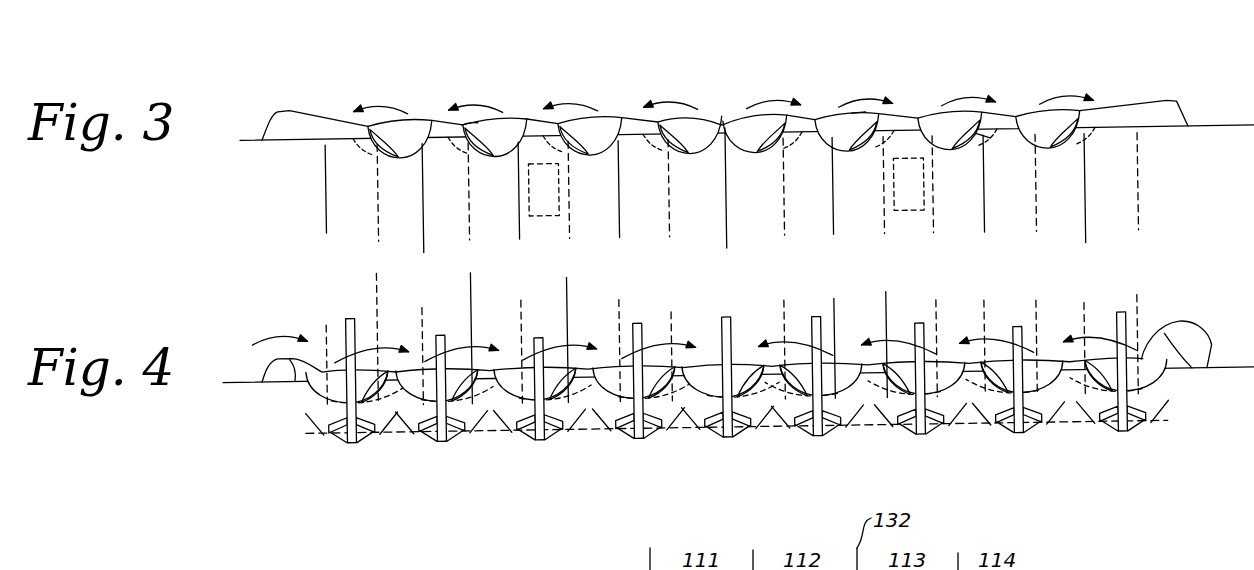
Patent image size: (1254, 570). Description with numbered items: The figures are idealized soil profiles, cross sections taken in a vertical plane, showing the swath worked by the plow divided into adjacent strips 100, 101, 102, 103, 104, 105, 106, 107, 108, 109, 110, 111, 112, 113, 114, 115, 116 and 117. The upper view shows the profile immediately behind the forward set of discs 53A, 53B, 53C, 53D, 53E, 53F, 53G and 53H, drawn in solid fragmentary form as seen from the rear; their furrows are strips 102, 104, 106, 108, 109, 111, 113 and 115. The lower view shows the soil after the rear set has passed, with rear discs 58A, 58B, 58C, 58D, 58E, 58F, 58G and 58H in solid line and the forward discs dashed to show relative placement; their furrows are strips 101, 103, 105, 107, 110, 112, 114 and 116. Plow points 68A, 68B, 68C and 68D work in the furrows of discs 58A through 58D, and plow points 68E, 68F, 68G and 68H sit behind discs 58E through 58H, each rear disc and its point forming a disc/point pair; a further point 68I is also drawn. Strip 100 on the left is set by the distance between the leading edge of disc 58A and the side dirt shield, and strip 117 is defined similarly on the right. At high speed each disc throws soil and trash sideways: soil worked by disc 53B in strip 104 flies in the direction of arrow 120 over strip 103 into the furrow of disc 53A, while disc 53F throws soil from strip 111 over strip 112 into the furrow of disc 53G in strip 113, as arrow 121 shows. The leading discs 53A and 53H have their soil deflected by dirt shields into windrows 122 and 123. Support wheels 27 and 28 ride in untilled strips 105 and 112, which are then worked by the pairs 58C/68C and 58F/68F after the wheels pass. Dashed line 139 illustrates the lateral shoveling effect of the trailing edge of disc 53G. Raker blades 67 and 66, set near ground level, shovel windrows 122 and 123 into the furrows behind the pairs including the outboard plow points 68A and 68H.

In FIG. 3, the support wheel 27 is at (527, 206).
In FIG. 3, the support wheel 28 is at (925, 213).
In FIG. 3, the forward disc 53A is at (433, 117).
In FIG. 3, the forward disc 53B is at (528, 116).
In FIG. 3, the forward disc 53C is at (623, 116).
In FIG. 3, the forward disc 53D is at (725, 126).
In FIG. 3, the forward disc 53E is at (726, 126).
In FIG. 3, the forward disc 53F is at (815, 121).
In FIG. 3, the forward disc 53G is at (918, 121).
In FIG. 3, the forward disc 53H is at (1016, 121).
In FIG. 4, the rear disc 58A is at (327, 366).
In FIG. 4, the rear disc 58B is at (417, 366).
In FIG. 4, the rear disc 58C is at (519, 366).
In FIG. 4, the rear disc 58D is at (618, 366).
In FIG. 4, the rear disc 58E is at (845, 366).
In FIG. 4, the rear disc 58F is at (950, 366).
In FIG. 4, the rear disc 58G is at (1050, 366).
In FIG. 4, the rear disc 58H is at (1145, 335).
In FIG. 4, the raker blade 66 is at (1222, 352).
In FIG. 4, the raker blade 67 is at (243, 345).
In FIG. 4, the plow point 68A is at (351, 438).
In FIG. 4, the plow point 68B is at (441, 438).
In FIG. 4, the plow point 68C is at (539, 438).
In FIG. 4, the plow point 68D is at (638, 438).
In FIG. 4, the plow point 68E is at (817, 438).
In FIG. 4, the plow point 68F is at (920, 438).
In FIG. 4, the plow point 68G is at (1018, 438).
In FIG. 4, the plow point 68H is at (1122, 438).
In FIG. 4, the tine sweep 68I is at (727, 438).
In FIG. 3, the strip 100 is at (301, 189).
In FIG. 3, the strip 101 is at (355, 193).
In FIG. 3, the strip 102 is at (403, 199).
In FIG. 3, the strip 103 is at (448, 192).
In FIG. 3, the strip 104 is at (498, 191).
In FIG. 3, the strip 105 is at (547, 193).
In FIG. 3, the strip 106 is at (596, 190).
In FIG. 3, the strip 107 is at (646, 189).
In FIG. 3, the strip 108 is at (702, 188).
In FIG. 3, the strip 109 is at (758, 187).
In FIG. 3, the strip 110 is at (808, 186).
In FIG. 3, the strip 111 is at (858, 186).
In FIG. 3, the strip 112 is at (911, 189).
In FIG. 3, the strip 113 is at (961, 184).
In FIG. 3, the strip 114 is at (1012, 183).
In FIG. 3, the strip 115 is at (1062, 189).
In FIG. 3, the strip 116 is at (1114, 182).
In FIG. 3, the strip 117 is at (1166, 184).
In FIG. 3, the arrow 120 is at (468, 118).
In FIG. 3, the arrow 121 is at (858, 113).
In FIG. 3, the windrow 122 is at (305, 104).
In FIG. 3, the windrow 123 is at (1166, 100).
In FIG. 3, the dashed line 139 is at (984, 141).